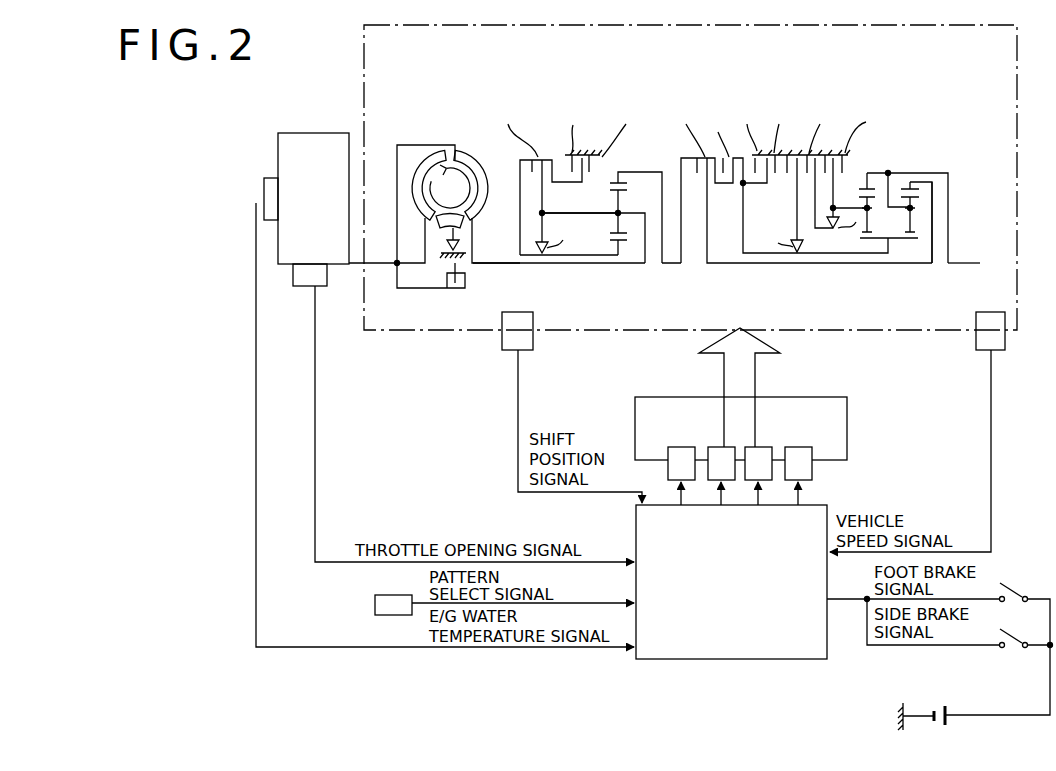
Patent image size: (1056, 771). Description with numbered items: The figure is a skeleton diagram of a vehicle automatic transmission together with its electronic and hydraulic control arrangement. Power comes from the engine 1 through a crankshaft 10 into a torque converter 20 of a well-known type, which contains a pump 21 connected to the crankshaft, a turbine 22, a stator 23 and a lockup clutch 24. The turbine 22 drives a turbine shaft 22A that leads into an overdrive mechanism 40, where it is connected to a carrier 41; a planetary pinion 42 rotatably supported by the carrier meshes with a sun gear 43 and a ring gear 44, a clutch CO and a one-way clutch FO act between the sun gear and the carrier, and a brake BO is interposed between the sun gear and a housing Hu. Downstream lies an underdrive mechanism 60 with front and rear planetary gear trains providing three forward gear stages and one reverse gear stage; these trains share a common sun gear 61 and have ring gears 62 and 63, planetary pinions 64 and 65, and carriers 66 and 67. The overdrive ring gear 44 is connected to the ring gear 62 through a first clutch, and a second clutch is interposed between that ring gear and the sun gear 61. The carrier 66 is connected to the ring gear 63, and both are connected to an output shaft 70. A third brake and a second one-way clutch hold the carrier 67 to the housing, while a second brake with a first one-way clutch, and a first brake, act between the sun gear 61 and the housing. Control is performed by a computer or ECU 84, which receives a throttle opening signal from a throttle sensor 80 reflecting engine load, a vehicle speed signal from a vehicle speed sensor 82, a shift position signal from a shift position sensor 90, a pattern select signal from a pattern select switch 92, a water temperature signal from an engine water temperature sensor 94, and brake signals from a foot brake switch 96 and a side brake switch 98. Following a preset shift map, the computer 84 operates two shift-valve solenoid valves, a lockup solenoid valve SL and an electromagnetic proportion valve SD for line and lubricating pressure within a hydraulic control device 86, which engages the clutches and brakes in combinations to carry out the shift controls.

The engine 1 is at (305, 131).
The crankshaft 10 is at (378, 267).
The torque converter 20 is at (458, 189).
The pump 21 is at (473, 163).
The turbine 22 is at (450, 186).
The turbine shaft 22A is at (507, 265).
The stator 23 is at (462, 226).
The lockup clutch 24 is at (418, 289).
The overdrive mechanism 40 is at (588, 160).
The carrier 41 is at (628, 214).
The planetary pinion 42 is at (606, 192).
The sun gear 43 is at (611, 241).
The ring gear 44 is at (614, 181).
The underdrive mechanism 60 is at (824, 161).
The common sun gear 61 is at (896, 240).
The ring gear 62 is at (905, 186).
The ring gear 63 is at (888, 176).
The planetary pinion 64 is at (910, 208).
The planetary pinion 65 is at (881, 220).
The carrier 66 is at (913, 222).
The carrier 67 is at (850, 188).
The output shaft 70 is at (969, 266).
The throttle sensor 80 is at (297, 284).
The vehicle speed sensor 82 is at (976, 340).
The computer (ECU) 84 is at (736, 660).
The hydraulic control device 86 is at (848, 430).
The shift position sensor 90 is at (536, 340).
The pattern select switch 92 is at (375, 600).
The engine water temperature sensor 94 is at (268, 180).
The foot brake switch 96 is at (1015, 590).
The side brake switch 98 is at (1012, 652).